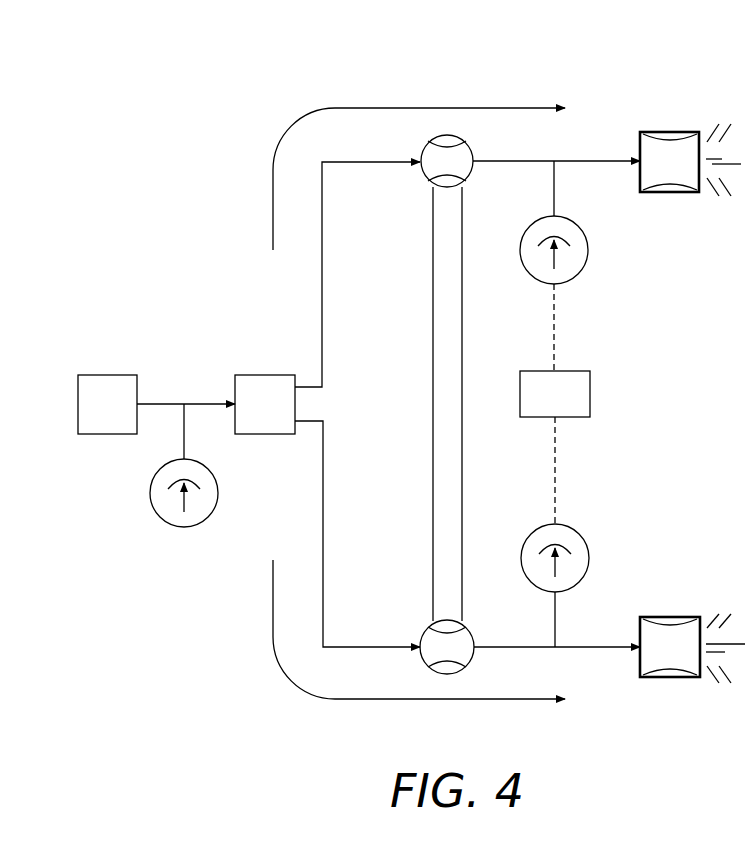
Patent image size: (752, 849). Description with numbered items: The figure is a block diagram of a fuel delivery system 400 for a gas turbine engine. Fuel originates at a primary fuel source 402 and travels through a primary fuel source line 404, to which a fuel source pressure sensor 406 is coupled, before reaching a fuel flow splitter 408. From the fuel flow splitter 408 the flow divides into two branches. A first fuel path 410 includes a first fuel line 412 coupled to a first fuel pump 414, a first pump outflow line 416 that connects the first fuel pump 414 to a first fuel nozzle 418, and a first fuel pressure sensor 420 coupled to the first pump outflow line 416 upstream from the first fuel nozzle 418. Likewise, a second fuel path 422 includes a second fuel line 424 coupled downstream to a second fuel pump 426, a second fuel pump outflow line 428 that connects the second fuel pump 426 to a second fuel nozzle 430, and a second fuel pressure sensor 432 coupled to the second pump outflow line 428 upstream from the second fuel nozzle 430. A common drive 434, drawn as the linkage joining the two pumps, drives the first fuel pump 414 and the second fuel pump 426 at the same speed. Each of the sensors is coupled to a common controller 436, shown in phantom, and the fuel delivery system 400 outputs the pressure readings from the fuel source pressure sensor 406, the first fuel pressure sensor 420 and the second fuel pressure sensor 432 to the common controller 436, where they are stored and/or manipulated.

The fuel delivery system 400 is at (267, 82).
The primary fuel source 402 is at (107, 404).
The primary fuel source line 404 is at (167, 404).
The fuel source pressure sensor 406 is at (149, 494).
The fuel flow splitter 408 is at (265, 404).
The first fuel path 410 is at (273, 203).
The first fuel line 412 is at (322, 288).
The first fuel pump 414 is at (447, 161).
The first pump outflow line 416 is at (598, 160).
The first fuel nozzle 418 is at (690, 160).
The first fuel pressure sensor 420 is at (588, 249).
The second fuel path 422 is at (273, 604).
The second fuel line 424 is at (323, 535).
The second fuel pump 426 is at (447, 647).
The second fuel pump outflow line 428 is at (600, 650).
The second fuel nozzle 430 is at (692, 648).
The second fuel pressure sensor 432 is at (590, 557).
The common drive 434 is at (433, 374).
The common controller 436 is at (555, 404).